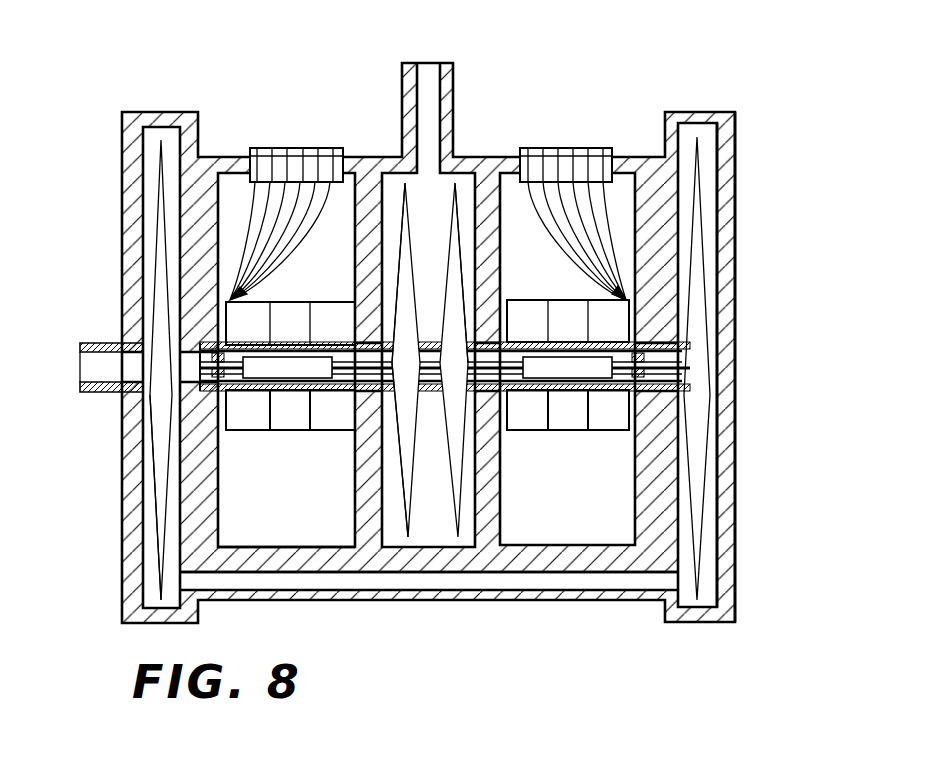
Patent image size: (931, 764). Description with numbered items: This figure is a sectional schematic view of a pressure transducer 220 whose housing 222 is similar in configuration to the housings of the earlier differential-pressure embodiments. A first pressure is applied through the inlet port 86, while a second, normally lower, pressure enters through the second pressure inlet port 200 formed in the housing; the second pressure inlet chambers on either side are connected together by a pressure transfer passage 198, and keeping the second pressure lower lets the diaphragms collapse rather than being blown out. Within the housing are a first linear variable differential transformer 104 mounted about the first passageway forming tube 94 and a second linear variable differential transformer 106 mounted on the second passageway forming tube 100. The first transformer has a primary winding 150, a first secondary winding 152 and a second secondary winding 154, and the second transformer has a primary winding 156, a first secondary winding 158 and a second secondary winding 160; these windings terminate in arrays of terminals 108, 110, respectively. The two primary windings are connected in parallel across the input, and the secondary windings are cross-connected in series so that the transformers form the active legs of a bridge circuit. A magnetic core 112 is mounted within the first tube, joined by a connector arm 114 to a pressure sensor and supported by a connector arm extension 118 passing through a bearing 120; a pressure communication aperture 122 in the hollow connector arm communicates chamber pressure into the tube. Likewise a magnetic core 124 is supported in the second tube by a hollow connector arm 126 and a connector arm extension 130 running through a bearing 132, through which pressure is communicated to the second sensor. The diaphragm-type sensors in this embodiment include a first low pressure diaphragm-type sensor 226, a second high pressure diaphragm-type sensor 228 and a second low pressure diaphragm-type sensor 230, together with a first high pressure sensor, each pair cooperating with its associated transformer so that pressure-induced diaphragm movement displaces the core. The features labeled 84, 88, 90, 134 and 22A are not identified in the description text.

The inlet port 86 is at (440, 63).
The center blade 84 is at (455, 183).
The second high pressure diaphragm-type sensor 228 is at (400, 190).
The blade edge 22A is at (465, 212).
The array of terminals 110 is at (292, 148).
The array of terminals 108 is at (580, 148).
The pressure transducer 220 is at (742, 155).
The housing 222 is at (725, 205).
The first low pressure diaphragm-type sensor 226 is at (725, 520).
The connector arm 114 is at (457, 363).
The left upper magnet 134 is at (322, 305).
The magnetic core 124 is at (290, 357).
The pressure communication aperture 122 is at (512, 330).
The magnetic core 112 is at (556, 357).
The second linear variable differential transformer 106 is at (212, 312).
The first linear variable differential transformer 104 is at (638, 318).
The second pressure inlet port 200 is at (92, 343).
The connector arm extension 130 is at (200, 369).
The connector arm extension 118 is at (690, 366).
The bearing 120 is at (690, 382).
The bearing 132 is at (178, 392).
The second passageway forming tube 100 is at (165, 415).
The first passageway forming tube 94 is at (655, 398).
The second low pressure diaphragm-type sensor 230 is at (160, 492).
The second secondary winding 160 is at (258, 432).
The primary winding 156 is at (295, 432).
The first secondary winding 158 is at (330, 432).
The second secondary winding 154 is at (535, 432).
The primary winding 150 is at (568, 432).
The first secondary winding 152 is at (610, 432).
The connector arm 126 is at (413, 387).
The bottom wall 90 is at (340, 572).
The bottom plate 88 is at (472, 575).
The pressure transfer passage 198 is at (585, 590).